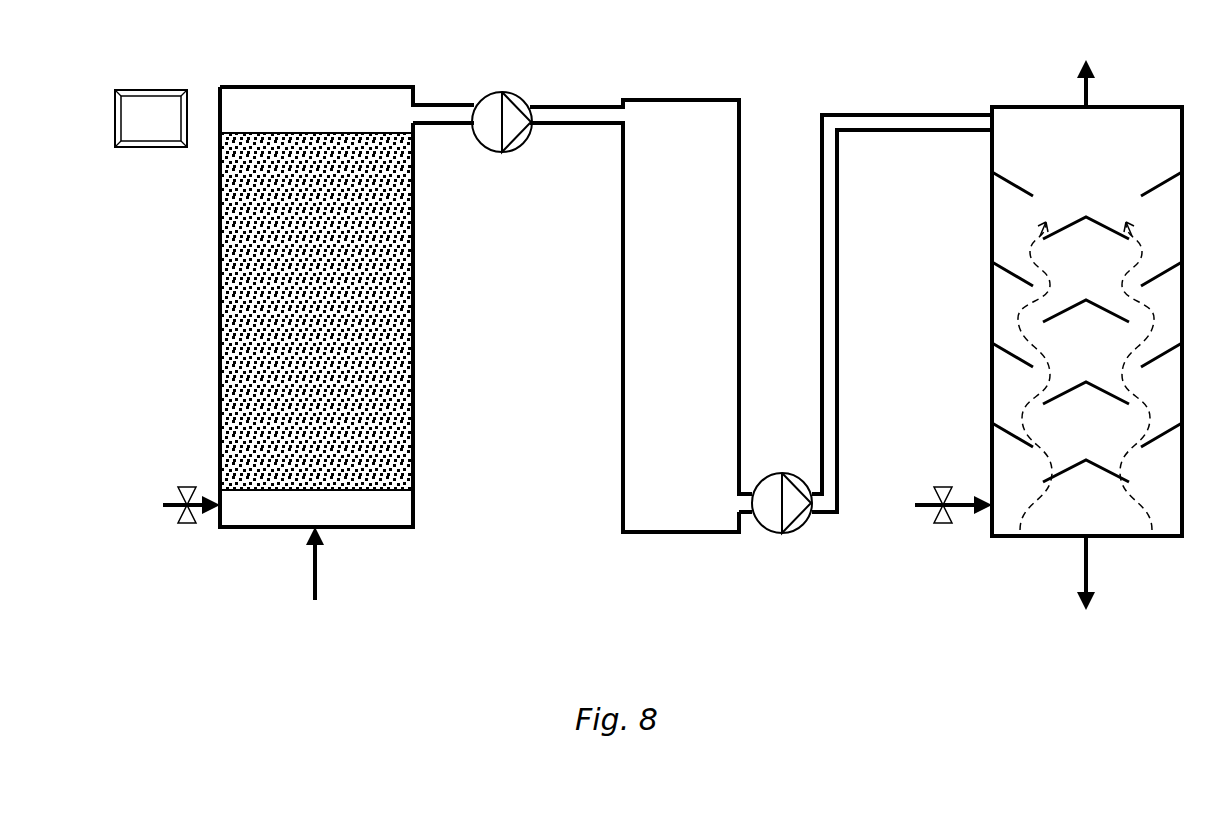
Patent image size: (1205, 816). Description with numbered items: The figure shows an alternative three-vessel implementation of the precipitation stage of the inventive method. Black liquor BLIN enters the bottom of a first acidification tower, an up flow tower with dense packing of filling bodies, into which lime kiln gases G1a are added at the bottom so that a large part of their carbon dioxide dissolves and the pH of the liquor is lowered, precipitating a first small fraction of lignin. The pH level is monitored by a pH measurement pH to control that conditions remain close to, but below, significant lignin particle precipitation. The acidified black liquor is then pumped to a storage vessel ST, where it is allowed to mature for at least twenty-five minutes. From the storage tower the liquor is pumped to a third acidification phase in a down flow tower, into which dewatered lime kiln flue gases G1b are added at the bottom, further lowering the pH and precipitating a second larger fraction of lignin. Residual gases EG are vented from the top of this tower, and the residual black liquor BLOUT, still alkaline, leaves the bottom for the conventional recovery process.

The pH measurement pH is at (263, 118).
The storage vessel ST is at (676, 306).
The residual gases EG is at (1087, 65).
The residual black liquor BLOUT is at (1087, 596).
The black liquor inlet BLIN is at (301, 579).
The lime kiln gases G1a is at (169, 504).
The lime kiln flue gases G1b is at (934, 504).